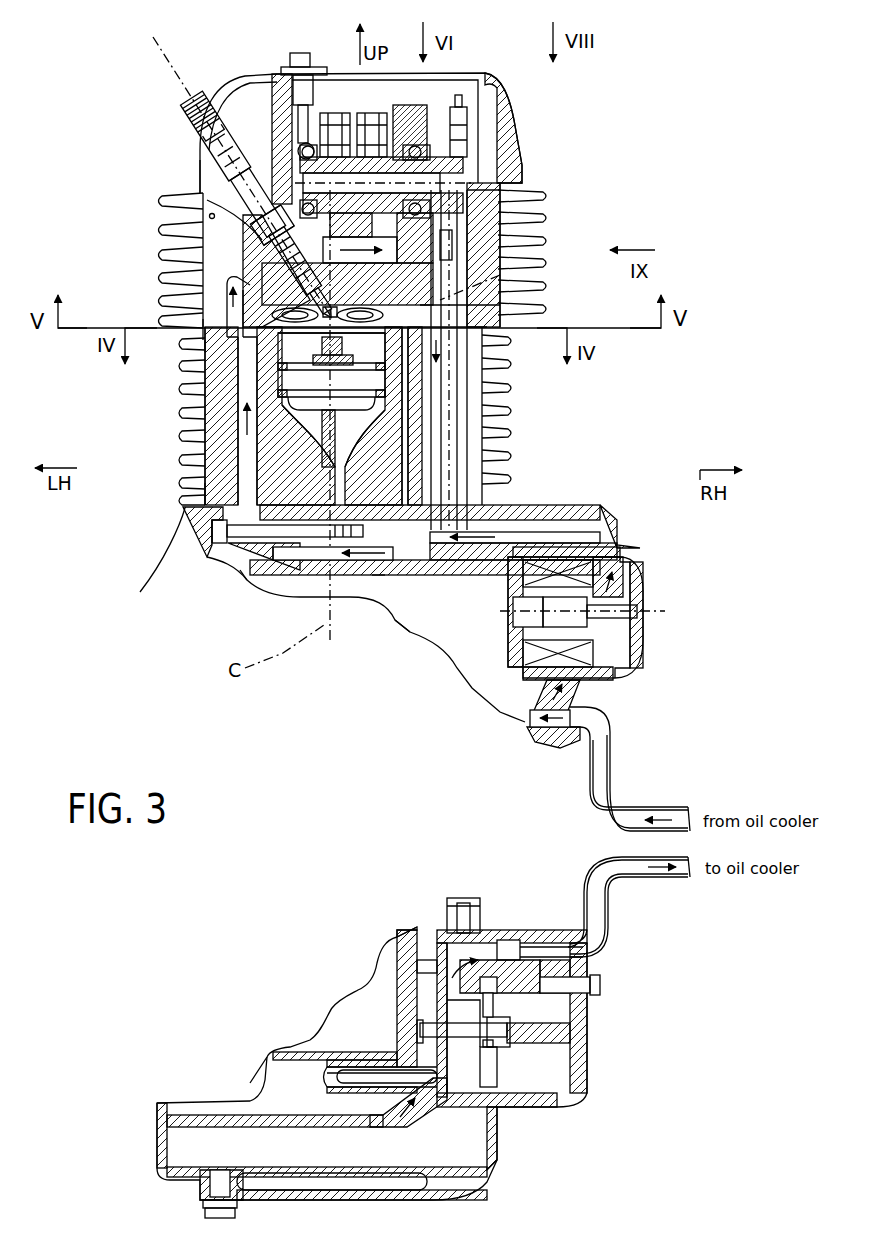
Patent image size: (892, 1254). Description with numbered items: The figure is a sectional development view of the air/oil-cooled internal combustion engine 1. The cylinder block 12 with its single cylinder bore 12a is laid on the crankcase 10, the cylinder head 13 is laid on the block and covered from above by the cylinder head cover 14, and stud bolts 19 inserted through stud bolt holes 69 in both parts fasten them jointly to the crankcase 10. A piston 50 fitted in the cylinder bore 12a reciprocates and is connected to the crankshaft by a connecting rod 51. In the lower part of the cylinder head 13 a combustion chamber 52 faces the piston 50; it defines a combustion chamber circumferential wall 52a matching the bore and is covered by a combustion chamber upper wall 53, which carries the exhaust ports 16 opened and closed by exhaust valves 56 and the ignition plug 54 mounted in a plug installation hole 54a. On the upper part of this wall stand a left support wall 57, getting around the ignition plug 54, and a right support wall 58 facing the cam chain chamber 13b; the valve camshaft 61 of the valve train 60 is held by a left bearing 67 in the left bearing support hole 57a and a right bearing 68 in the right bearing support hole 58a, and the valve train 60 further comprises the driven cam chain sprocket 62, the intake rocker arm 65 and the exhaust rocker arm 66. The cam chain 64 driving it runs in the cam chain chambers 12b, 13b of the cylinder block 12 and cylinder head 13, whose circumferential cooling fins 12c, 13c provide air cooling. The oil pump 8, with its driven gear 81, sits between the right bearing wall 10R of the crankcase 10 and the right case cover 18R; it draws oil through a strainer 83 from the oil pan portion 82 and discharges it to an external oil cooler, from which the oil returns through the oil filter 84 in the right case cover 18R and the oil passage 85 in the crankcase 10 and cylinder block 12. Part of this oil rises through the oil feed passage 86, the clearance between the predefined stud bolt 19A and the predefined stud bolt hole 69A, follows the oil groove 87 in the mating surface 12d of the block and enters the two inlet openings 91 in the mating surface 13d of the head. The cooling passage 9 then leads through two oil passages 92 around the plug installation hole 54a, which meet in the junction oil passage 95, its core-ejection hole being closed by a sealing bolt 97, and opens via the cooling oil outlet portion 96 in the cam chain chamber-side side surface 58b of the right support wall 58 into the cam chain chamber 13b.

The internal combustion engine 1 is at (128, 98).
The oil pump 8 is at (503, 1062).
The cooling passage 9 is at (300, 255).
The crankcase 10 is at (500, 505).
The right bearing wall 10R is at (420, 587).
The cylinder block 12 is at (490, 427).
The cylinder bore 12a is at (392, 415).
The cam chain chamber 12b is at (475, 370).
The cooling fins 12c is at (490, 438).
The mating surface 12d is at (200, 305).
The cylinder head 13 is at (475, 255).
The cam chain chamber 13b is at (475, 225).
The cooling fins 13c is at (500, 287).
The mating surface 13d is at (192, 345).
The cylinder head cover 14 is at (520, 123).
The exhaust ports 16 is at (183, 635).
The right case cover 18R is at (577, 1024).
The stud bolts 19 is at (175, 587).
The predefined stud bolt 19A is at (190, 553).
The piston 50 is at (193, 412).
The connecting rod 51 is at (197, 453).
The combustion chamber 52 is at (193, 397).
The combustion chamber circumferential wall 52a is at (487, 313).
The combustion chamber upper wall 53 is at (360, 255).
The ignition plug 54 is at (220, 190).
The plug installation hole 54a is at (250, 262).
The exhaust valves 56 is at (240, 570).
The left support wall 57 is at (245, 210).
The left bearing support hole 57a is at (235, 120).
The right support wall 58 is at (490, 205).
The right bearing support hole 58a is at (440, 150).
The cam chain chamber-side side surface 58b is at (470, 255).
The valve train 60 is at (353, 110).
The valve camshaft 61 is at (180, 73).
The driven cam chain sprocket 62 is at (513, 113).
The cam chain 64 is at (495, 402).
The intake rocker arm 65 is at (372, 113).
The exhaust rocker arm 66 is at (337, 115).
The left bearing 67 is at (295, 130).
The right bearing 68 is at (430, 95).
The stud bolt holes 69 is at (144, 547).
The predefined stud bolt hole 69A is at (185, 505).
The driven gear 81 is at (493, 982).
The oil pan portion 82 is at (420, 1148).
The strainer 83 is at (370, 1077).
The oil filter 84 is at (648, 592).
The oil passage 85 is at (378, 585).
The oil feed passage 86 is at (195, 478).
The oil groove 87 is at (197, 373).
The inlet openings 91 is at (250, 290).
The oil passages 92 is at (210, 215).
The junction oil passage 95 is at (470, 183).
The cooling oil outlet portion 96 is at (500, 275).
The sealing bolt 97 is at (510, 163).